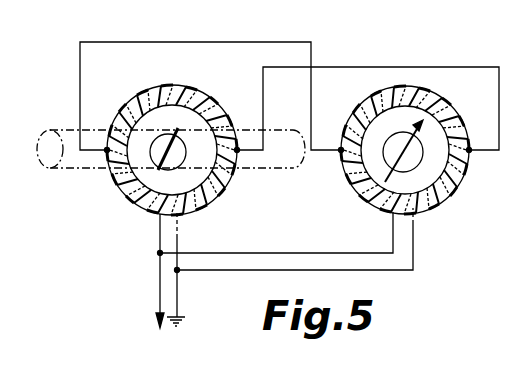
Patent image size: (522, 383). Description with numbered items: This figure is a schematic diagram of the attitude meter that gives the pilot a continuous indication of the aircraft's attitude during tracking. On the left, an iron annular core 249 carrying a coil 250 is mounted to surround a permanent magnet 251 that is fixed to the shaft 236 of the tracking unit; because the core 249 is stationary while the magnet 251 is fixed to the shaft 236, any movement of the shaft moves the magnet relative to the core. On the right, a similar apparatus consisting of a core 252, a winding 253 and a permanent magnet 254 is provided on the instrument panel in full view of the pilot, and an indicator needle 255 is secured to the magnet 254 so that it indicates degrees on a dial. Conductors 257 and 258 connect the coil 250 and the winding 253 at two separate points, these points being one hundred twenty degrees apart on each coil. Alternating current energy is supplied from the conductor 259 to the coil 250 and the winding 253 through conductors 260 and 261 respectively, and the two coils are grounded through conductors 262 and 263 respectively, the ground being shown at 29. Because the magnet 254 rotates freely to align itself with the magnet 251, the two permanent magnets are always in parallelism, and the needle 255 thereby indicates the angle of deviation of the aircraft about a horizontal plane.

The ground connection 29 is at (185, 322).
The shaft 236 is at (85, 172).
The iron annular core 249 is at (141, 92).
The coil 250 is at (195, 72).
The permanent magnet 251 is at (198, 175).
The core 252 is at (428, 92).
The winding 253 is at (441, 103).
The permanent magnet 254 is at (403, 168).
The indicator needle 255 is at (411, 127).
The conductor 257 is at (221, 42).
The conductor 258 is at (384, 67).
The conductor 259 is at (158, 289).
The conductor 260 is at (158, 229).
The conductor 261 is at (316, 238).
The conductor 262 is at (179, 236).
The conductor 263 is at (368, 271).